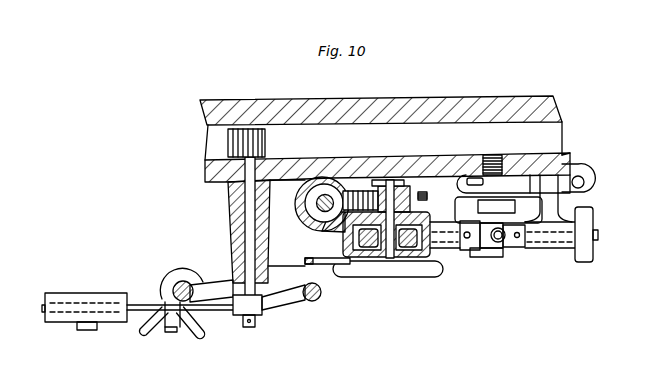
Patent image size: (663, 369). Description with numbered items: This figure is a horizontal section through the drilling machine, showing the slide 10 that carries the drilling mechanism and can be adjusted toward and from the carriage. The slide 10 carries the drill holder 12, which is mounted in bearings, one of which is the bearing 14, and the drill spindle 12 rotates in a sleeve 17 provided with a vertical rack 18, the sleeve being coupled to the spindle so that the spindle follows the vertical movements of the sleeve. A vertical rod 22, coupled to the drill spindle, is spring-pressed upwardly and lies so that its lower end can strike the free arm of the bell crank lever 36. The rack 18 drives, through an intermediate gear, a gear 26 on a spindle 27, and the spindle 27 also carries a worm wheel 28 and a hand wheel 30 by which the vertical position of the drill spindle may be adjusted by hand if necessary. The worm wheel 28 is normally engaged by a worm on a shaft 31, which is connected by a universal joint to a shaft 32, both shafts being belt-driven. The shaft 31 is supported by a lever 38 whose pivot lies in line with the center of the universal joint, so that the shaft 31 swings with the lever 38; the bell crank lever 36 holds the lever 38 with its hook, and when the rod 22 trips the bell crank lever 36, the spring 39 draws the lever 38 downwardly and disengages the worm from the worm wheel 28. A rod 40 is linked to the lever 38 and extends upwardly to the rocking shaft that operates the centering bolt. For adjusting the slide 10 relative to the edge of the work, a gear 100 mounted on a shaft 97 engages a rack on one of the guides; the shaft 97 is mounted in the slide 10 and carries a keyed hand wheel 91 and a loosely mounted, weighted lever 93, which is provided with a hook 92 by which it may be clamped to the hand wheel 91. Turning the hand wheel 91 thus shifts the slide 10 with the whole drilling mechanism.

The slide 10 is at (463, 168).
The drill holder 12 is at (300, 214).
The bearing 14 is at (306, 236).
The sleeve 17 is at (333, 195).
The vertical rack 18 is at (347, 188).
The vertical rod 22 is at (314, 255).
The gear 26 is at (391, 180).
The spindle 27 is at (373, 252).
The worm wheel 28 is at (404, 252).
The hand wheel 30 is at (440, 276).
The shaft 31 is at (477, 250).
The shaft 32 is at (554, 242).
The bell crank lever 36 is at (350, 277).
The lever 38 is at (513, 180).
The spring 39 is at (586, 182).
The rod 40 is at (423, 190).
The hand wheel 91 is at (311, 301).
The hook 92 is at (178, 283).
The lever 93 is at (135, 313).
The shaft 97 is at (246, 251).
The gear 100 is at (229, 142).